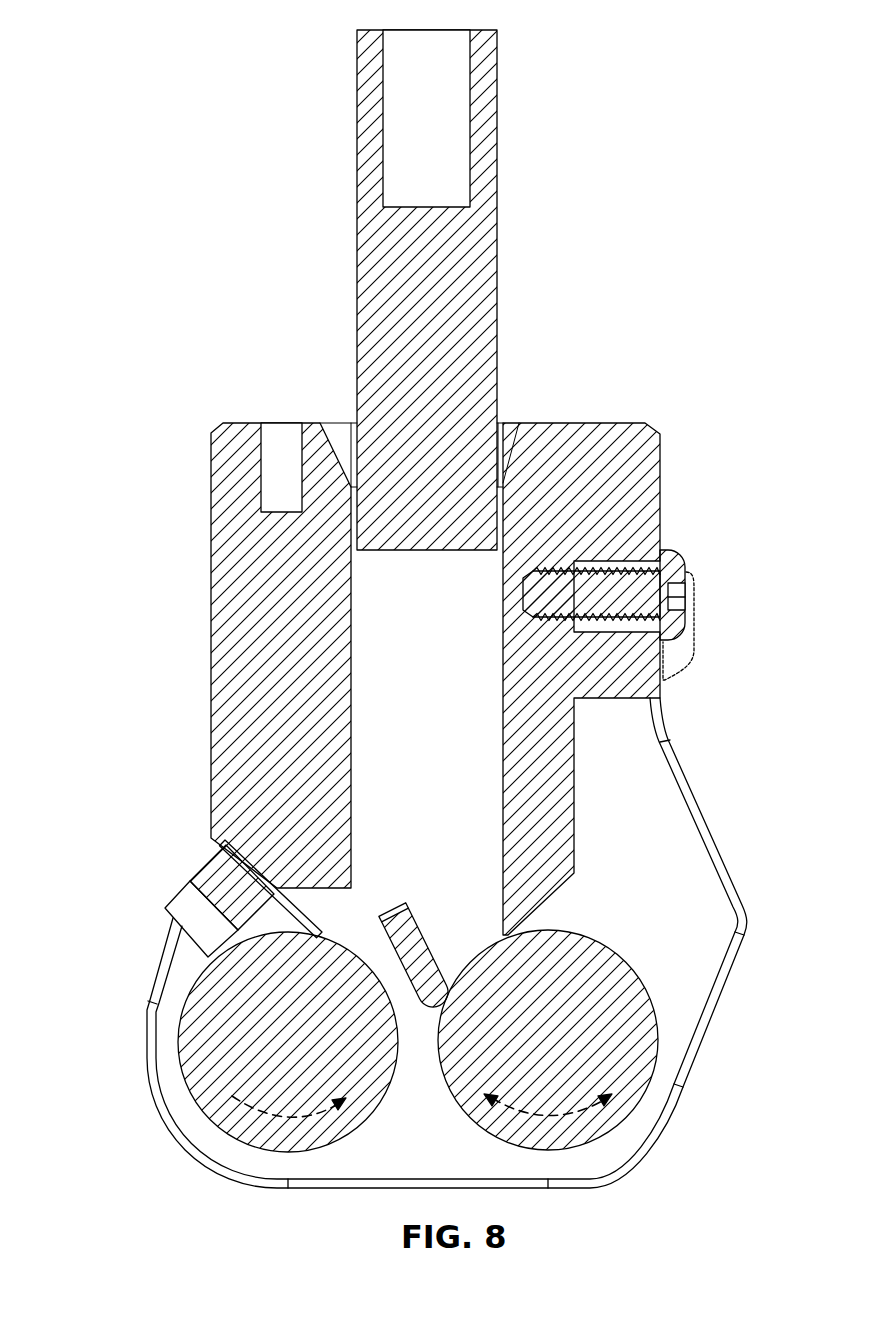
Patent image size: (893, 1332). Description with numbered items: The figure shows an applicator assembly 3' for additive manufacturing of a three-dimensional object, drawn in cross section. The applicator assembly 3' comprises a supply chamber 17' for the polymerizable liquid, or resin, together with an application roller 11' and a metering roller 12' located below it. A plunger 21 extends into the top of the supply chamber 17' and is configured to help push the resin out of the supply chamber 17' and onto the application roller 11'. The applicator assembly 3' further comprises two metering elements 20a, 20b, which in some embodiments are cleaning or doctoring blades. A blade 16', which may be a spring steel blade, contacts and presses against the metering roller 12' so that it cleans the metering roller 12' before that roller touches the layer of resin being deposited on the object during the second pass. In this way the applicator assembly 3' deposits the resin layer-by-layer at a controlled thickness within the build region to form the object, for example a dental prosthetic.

The applicator assembly 3' is at (399, 598).
The plunger 21 is at (493, 257).
The supply chamber 17' is at (254, 655).
The metering element 20a is at (545, 798).
The metering element 20b is at (420, 943).
The blade 16' is at (281, 898).
The metering roller 12' is at (288, 1042).
The application roller 11' is at (548, 1040).